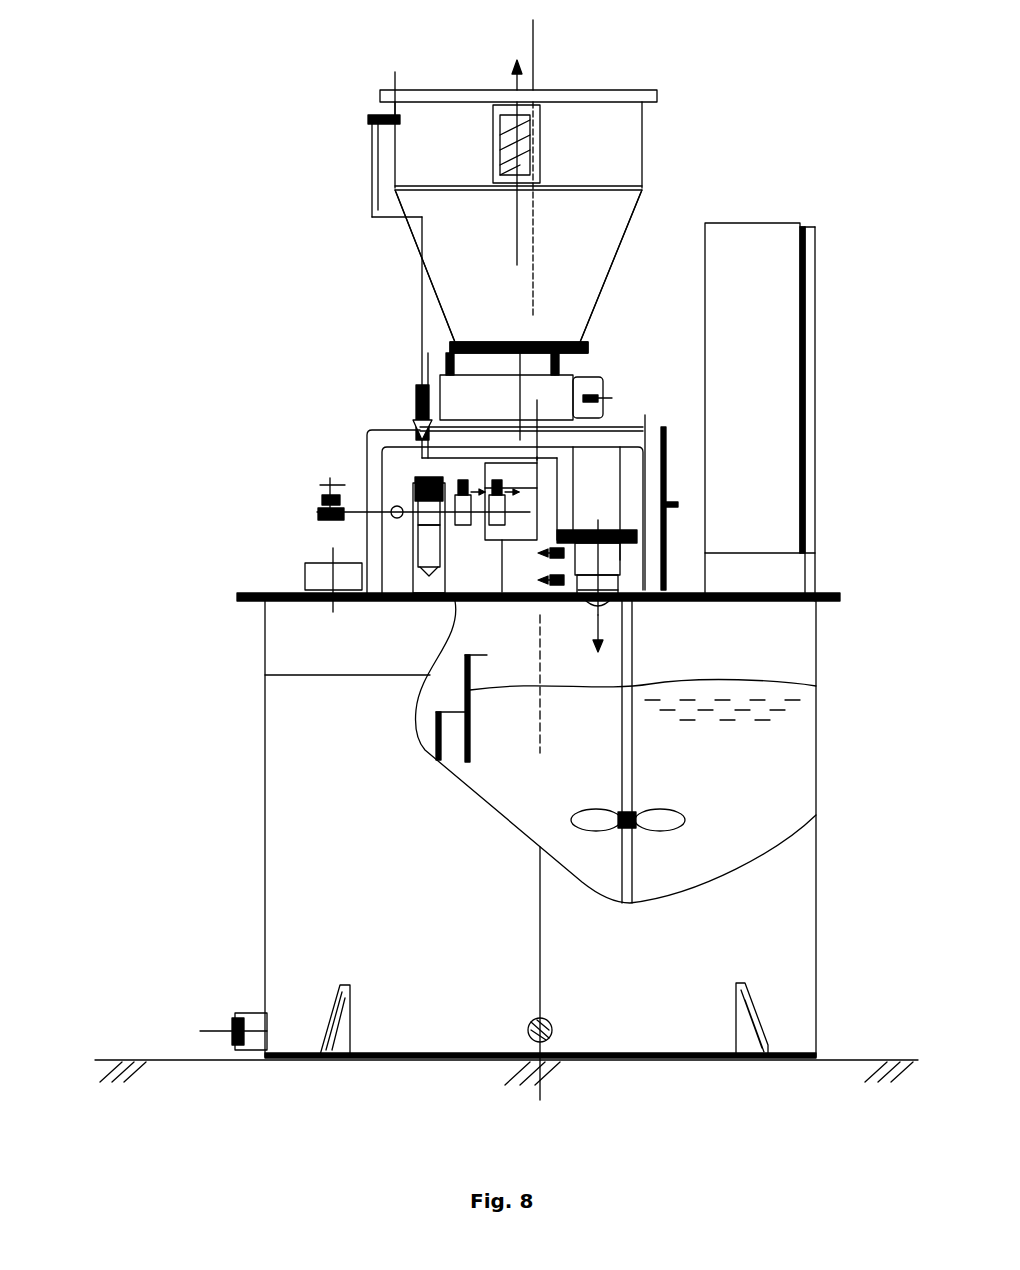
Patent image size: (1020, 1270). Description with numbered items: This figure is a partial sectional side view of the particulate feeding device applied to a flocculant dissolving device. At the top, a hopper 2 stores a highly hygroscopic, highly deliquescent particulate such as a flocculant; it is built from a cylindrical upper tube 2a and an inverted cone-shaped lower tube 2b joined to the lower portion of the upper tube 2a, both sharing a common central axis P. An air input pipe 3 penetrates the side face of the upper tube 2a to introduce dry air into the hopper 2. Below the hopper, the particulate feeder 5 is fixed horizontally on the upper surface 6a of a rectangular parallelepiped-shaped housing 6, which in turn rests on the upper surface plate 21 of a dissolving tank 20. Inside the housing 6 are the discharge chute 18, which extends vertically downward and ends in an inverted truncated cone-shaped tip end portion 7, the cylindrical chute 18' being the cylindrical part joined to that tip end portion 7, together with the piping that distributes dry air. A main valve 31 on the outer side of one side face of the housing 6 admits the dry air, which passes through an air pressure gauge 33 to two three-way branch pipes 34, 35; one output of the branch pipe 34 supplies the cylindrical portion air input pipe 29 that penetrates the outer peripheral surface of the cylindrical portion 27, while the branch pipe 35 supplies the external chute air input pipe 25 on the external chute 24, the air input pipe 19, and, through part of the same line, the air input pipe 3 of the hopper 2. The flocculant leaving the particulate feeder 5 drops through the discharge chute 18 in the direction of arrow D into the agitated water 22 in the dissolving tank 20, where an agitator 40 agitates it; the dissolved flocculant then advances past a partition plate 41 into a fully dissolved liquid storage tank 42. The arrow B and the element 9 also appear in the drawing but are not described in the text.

The hopper 2 is at (600, 226).
The upper tube 2a is at (645, 130).
The lower tube 2b is at (603, 258).
The air input pipe 3 is at (394, 86).
The central axis P is at (515, 222).
The flow direction B is at (450, 360).
The air input pipe 19 is at (450, 350).
The valve 9 is at (418, 398).
The particulate feeder 5 is at (497, 410).
The upper surface 6a is at (652, 424).
The housing 6 is at (664, 458).
The cylindrical chute 18' is at (654, 495).
The discharge chute 18 is at (673, 537).
The main valve 31 is at (328, 478).
The air pressure gauge 33 is at (420, 518).
The three-way branch pipe 34 is at (464, 527).
The three-way branch pipe 35 is at (500, 595).
The external chute air input pipe 25 is at (565, 538).
The tip end portion 7 is at (624, 556).
The external chute 24 is at (626, 562).
The cylindrical portion air input pipe 29 is at (566, 598).
The cylindrical portion 27 is at (617, 589).
The flocculant feed direction arrow D is at (605, 630).
The upper surface plate 21 is at (746, 592).
The dissolving tank 20 is at (780, 799).
The agitated water 22 is at (735, 685).
The partition plate 41 is at (446, 737).
The agitator 40 is at (665, 812).
The fully dissolved liquid storage tank 42 is at (382, 884).